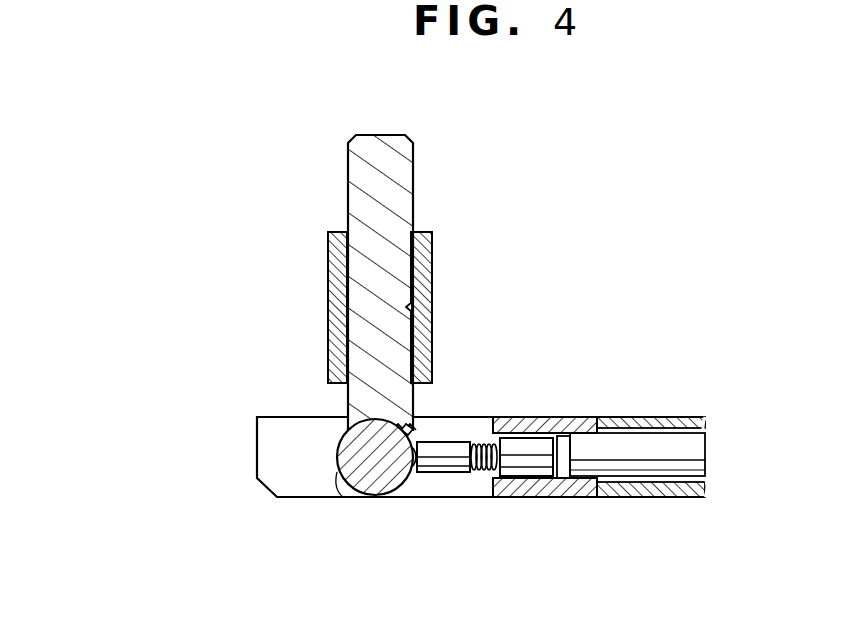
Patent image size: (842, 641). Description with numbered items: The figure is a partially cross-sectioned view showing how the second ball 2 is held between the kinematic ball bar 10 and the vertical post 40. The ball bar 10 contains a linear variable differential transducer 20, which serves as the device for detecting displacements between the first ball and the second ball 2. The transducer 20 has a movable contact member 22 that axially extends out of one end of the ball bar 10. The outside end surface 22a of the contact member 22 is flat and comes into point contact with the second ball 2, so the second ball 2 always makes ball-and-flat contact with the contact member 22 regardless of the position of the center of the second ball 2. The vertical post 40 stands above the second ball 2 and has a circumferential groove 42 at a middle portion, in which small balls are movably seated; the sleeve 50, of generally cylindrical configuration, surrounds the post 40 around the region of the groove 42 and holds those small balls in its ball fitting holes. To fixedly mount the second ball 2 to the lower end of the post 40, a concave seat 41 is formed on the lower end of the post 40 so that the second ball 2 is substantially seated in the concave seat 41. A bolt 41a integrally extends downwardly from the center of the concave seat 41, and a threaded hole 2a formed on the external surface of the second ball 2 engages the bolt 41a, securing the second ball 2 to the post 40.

The second ball 2 is at (375, 487).
The threaded hole 2a is at (343, 497).
The kinematic ball bar 10 is at (623, 415).
The linear variable differential transducer 20 is at (658, 453).
The movable contact member 22 is at (457, 467).
The outside end surface 22a is at (412, 478).
The vertical post 40 is at (403, 173).
The concave seat 41 is at (423, 427).
The bolt 41a is at (348, 413).
The circumferential groove 42 is at (413, 308).
The sleeve 50 is at (428, 263).